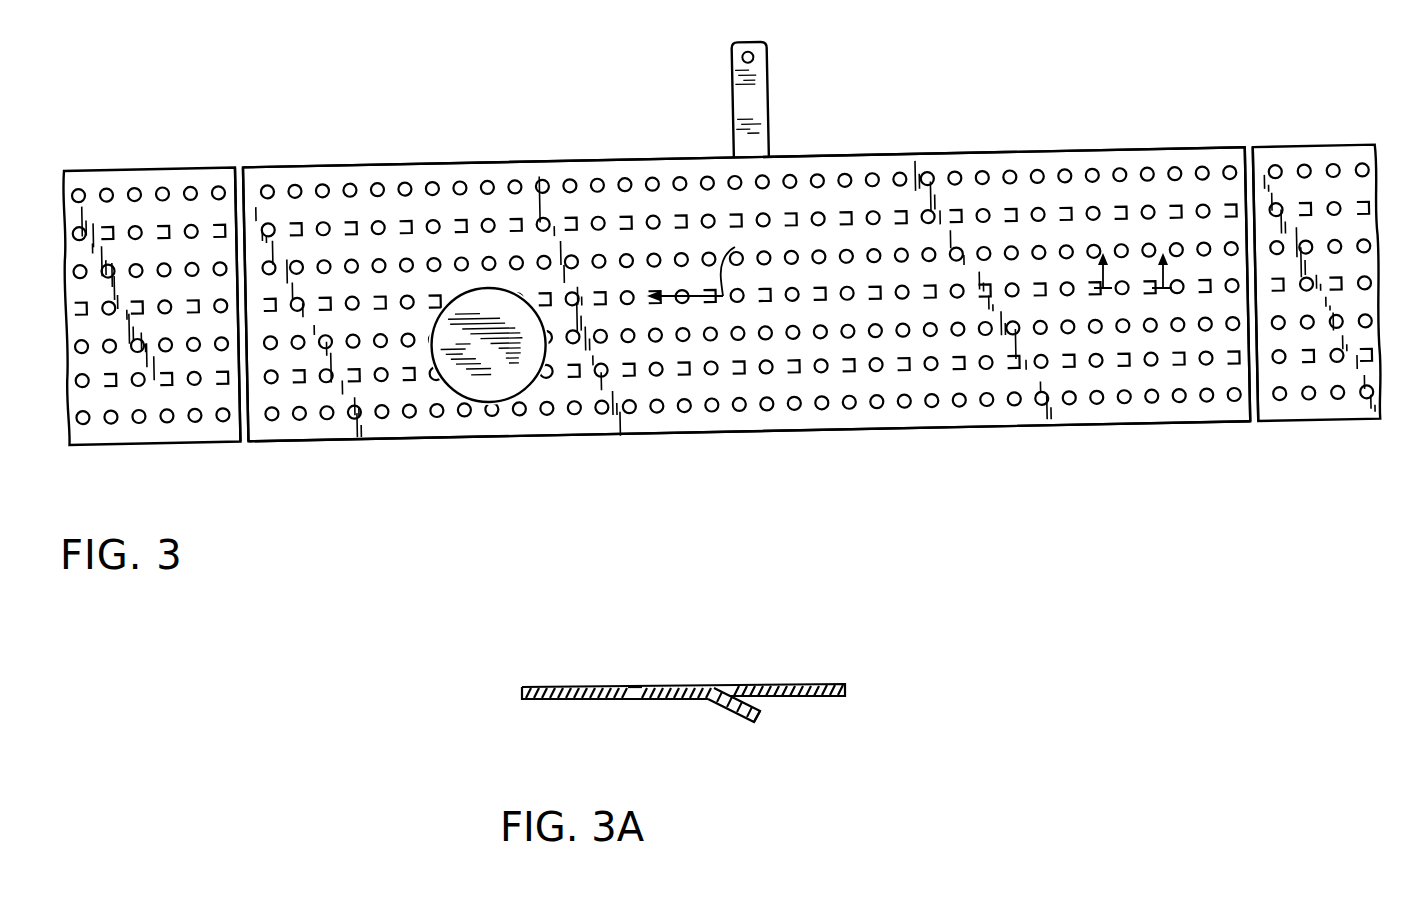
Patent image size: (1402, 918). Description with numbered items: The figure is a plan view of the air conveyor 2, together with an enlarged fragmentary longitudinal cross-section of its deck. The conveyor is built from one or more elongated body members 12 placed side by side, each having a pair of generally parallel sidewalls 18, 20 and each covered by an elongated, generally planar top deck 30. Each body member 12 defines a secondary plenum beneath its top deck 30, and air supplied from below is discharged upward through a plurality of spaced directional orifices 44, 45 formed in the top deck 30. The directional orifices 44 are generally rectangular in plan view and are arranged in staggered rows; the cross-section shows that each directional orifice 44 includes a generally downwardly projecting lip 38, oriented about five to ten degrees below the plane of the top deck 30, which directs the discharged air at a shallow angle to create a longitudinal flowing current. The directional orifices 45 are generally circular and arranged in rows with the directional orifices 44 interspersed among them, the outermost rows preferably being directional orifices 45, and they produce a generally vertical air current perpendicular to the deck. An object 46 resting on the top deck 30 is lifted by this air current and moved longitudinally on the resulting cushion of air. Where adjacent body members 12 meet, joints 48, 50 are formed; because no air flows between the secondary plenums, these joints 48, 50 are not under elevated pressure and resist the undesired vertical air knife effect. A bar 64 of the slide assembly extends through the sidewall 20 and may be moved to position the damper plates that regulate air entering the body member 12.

In FIG. 3, the air conveyor 2 is at (984, 152).
In FIG. 3, the elongated body member 12 is at (180, 177).
In FIG. 3, the sidewall 18 is at (796, 434).
In FIG. 3, the sidewall 20 is at (893, 156).
In FIG. 3, the top deck 30 is at (815, 166).
In FIG. 3A, the top deck 30 is at (821, 685).
In FIG. 3A, the lip 38 is at (748, 721).
In FIG. 3, the directional orifice 44 is at (413, 218).
In FIG. 3A, the directional orifice 44 is at (734, 686).
In FIG. 3, the directional orifice 45 is at (518, 186).
In FIG. 3A, the directional orifice 45 is at (618, 687).
In FIG. 3, the object 46 is at (484, 381).
In FIG. 3, the joint 48 is at (248, 434).
In FIG. 3, the joint 50 is at (1257, 410).
In FIG. 3, the bar 64 is at (766, 68).